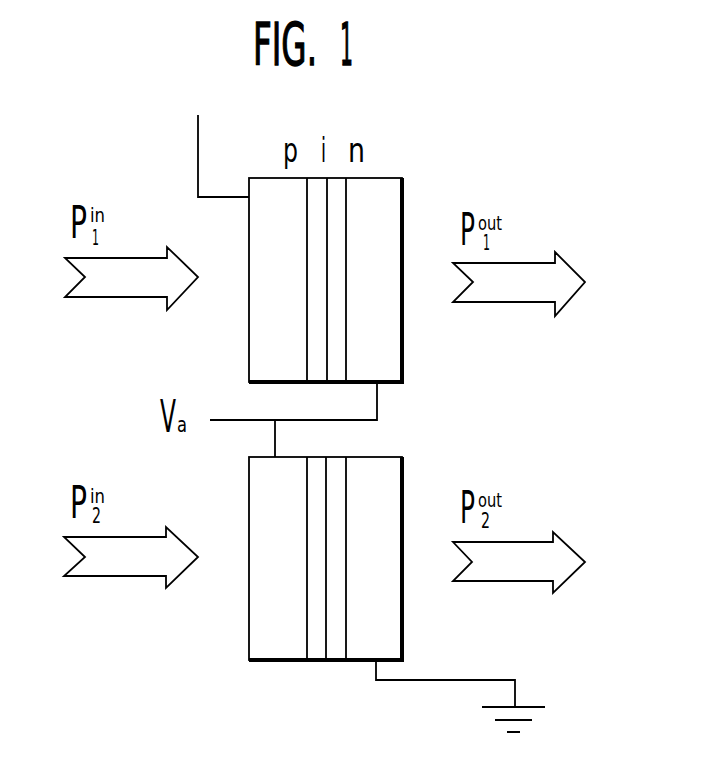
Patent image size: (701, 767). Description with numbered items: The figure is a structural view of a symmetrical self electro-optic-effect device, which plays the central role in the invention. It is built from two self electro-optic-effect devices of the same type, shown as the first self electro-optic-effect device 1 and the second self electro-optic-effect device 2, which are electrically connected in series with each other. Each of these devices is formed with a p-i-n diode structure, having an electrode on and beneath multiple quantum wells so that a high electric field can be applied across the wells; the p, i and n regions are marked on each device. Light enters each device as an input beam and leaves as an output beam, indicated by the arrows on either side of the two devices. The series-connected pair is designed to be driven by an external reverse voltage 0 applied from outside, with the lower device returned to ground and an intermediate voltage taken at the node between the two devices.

The bias voltage supply V0 line 0 is at (217, 132).
The first SEED (self-electrooptic effect device) with p-i-n diode 1 is at (373, 286).
The second SEED (self-electrooptic effect device) with p-i-n diode 2 is at (373, 565).